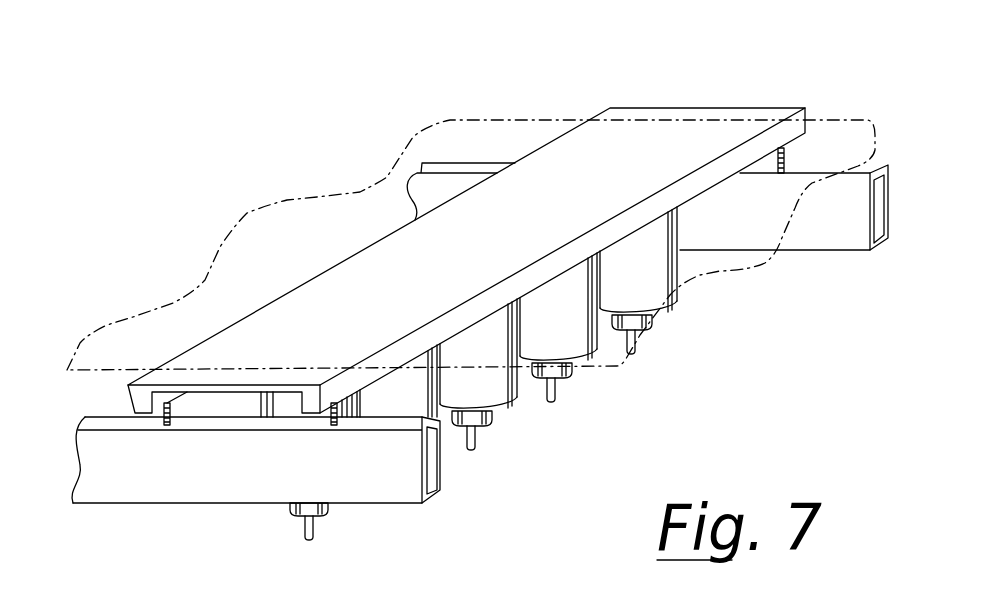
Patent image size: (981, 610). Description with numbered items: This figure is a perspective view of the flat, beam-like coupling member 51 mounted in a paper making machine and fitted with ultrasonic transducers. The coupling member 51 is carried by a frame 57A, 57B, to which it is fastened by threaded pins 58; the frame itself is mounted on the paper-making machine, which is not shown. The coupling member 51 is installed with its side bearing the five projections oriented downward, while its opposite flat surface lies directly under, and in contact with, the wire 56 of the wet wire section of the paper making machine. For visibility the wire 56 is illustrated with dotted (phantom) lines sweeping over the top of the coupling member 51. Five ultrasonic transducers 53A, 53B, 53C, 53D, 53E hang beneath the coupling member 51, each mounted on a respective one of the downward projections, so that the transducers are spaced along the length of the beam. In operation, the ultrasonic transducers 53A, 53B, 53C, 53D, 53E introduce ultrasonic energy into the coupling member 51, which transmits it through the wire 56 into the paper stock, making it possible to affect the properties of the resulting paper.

The coupling member 51 is at (660, 107).
The wire 56 is at (523, 122).
The frame 57A is at (833, 250).
The frame 57B is at (225, 503).
The threaded pins 58 is at (173, 412).
The ultrasonic transducer 53A is at (677, 302).
The ultrasonic transducer 53B is at (590, 356).
The ultrasonic transducer 53C is at (508, 400).
The ultrasonic transducer 53D is at (440, 416).
The ultrasonic transducer 53E is at (328, 512).